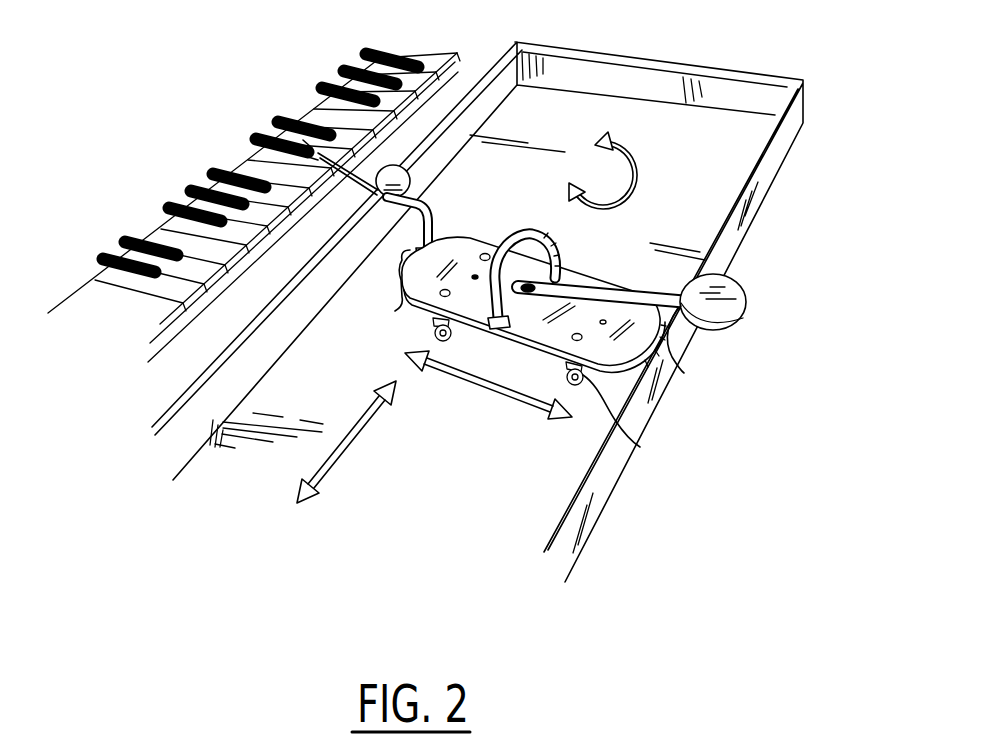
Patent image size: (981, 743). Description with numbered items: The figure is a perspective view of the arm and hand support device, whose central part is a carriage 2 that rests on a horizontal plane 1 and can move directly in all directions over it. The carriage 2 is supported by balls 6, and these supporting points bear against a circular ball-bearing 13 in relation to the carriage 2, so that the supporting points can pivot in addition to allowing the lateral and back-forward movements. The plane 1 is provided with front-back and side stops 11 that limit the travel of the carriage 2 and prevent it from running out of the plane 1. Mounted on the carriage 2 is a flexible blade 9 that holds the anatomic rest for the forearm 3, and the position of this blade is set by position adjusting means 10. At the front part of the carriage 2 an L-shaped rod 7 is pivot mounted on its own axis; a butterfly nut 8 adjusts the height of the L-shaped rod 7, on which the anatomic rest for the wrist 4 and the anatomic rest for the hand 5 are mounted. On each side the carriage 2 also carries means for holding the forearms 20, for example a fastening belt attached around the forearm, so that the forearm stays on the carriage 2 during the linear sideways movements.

The horizontal plane 1 is at (400, 532).
The carriage 2 is at (537, 357).
The anatomic rest for the forearm 3 is at (742, 289).
The anatomic rest for the wrist 4 is at (411, 171).
The anatomic rest for the hand 5 is at (322, 145).
The balls 6 is at (451, 345).
The L-shaped rod 7 is at (434, 222).
The butterfly nut 8 is at (395, 311).
The flexible blade 9 is at (677, 362).
The position adjusting means 10 is at (570, 265).
The front-back and side stops 11 is at (589, 505).
The circular ball-bearing 13 is at (639, 446).
The means for holding the forearms 20 is at (514, 243).